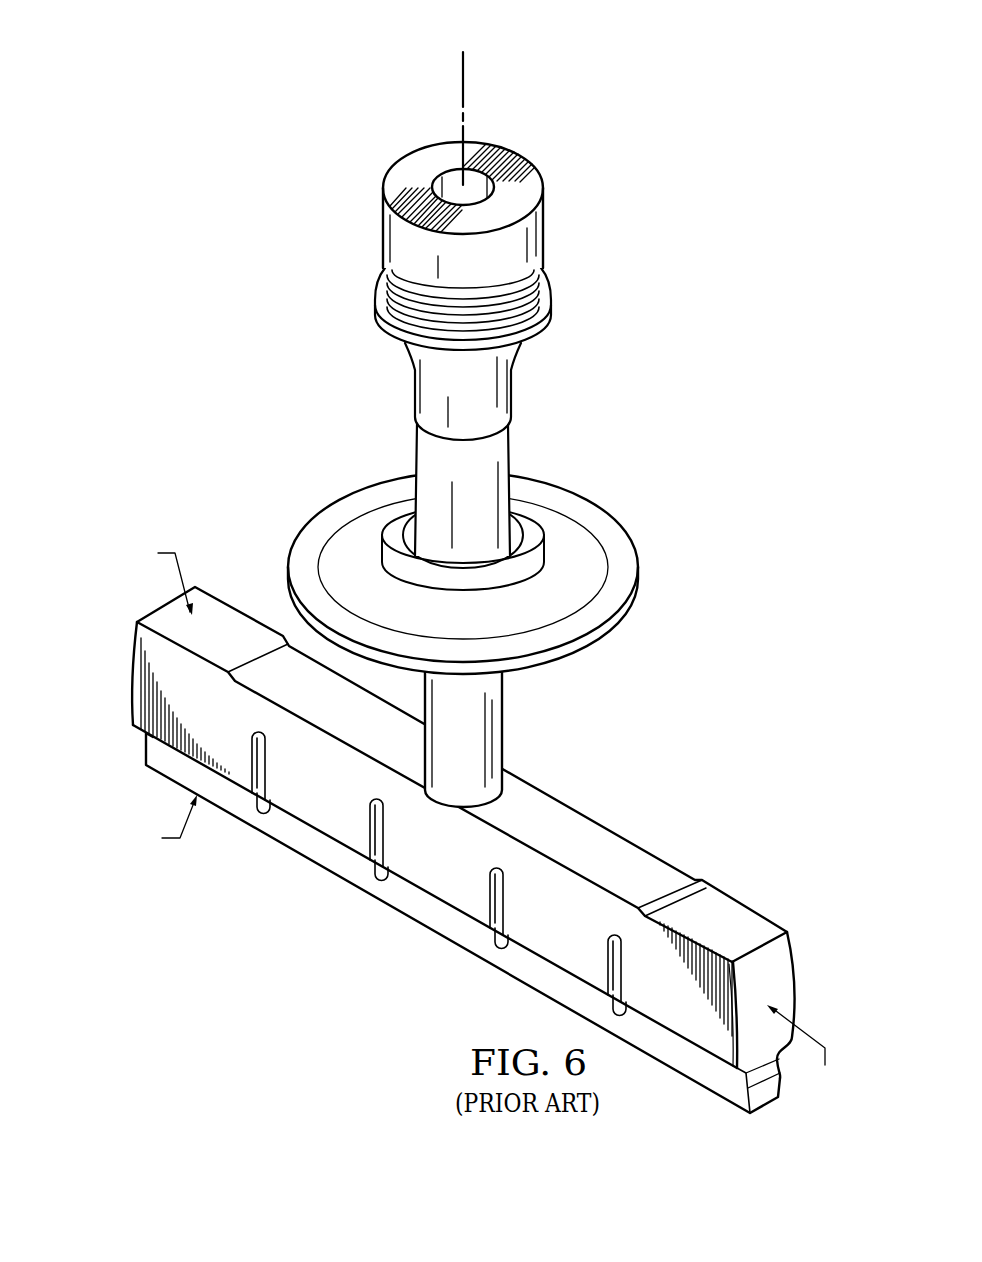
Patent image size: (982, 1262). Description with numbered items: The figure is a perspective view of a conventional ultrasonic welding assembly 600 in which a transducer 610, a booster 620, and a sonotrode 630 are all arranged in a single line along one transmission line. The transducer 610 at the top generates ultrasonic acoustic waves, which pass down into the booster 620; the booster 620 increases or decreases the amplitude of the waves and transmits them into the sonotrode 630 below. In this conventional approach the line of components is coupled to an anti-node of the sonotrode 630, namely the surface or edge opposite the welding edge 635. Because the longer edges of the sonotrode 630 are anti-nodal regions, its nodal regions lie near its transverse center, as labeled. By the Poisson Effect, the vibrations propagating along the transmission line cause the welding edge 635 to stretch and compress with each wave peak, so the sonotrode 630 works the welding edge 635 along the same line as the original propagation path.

The ultrasonic welding assembly 600 is at (450, 567).
The transducer 610 is at (387, 225).
The booster 620 is at (328, 503).
The sonotrode 630 is at (463, 850).
The welding edge 635 is at (310, 860).